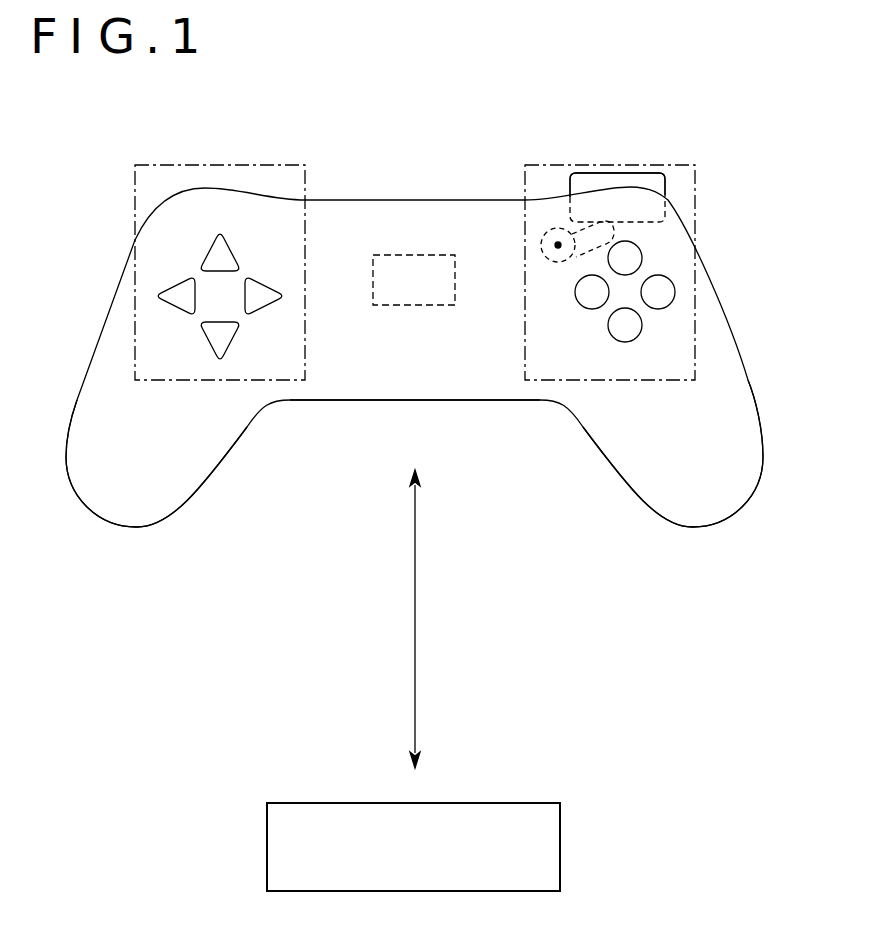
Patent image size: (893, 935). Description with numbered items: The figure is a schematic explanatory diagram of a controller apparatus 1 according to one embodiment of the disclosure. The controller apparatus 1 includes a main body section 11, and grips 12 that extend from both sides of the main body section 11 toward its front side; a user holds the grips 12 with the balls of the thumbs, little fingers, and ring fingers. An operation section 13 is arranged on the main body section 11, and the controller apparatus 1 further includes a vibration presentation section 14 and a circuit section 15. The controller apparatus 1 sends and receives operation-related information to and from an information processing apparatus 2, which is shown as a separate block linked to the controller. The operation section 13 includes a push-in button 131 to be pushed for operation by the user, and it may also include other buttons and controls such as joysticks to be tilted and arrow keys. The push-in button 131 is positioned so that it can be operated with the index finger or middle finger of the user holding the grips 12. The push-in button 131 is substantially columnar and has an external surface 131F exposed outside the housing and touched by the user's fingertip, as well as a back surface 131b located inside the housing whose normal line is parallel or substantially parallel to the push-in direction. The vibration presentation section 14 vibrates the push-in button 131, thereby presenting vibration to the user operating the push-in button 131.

The controller apparatus 1 is at (271, 586).
The information processing apparatus 2 is at (562, 831).
The main body section 11 is at (330, 427).
The grips 12 is at (110, 500).
The operation section 13 is at (135, 355).
The vibration presentation section 14 is at (558, 228).
The circuit section 15 is at (428, 255).
The push-in button 131 is at (665, 180).
The external surface 131F is at (626, 166).
The back surface 131b is at (653, 226).